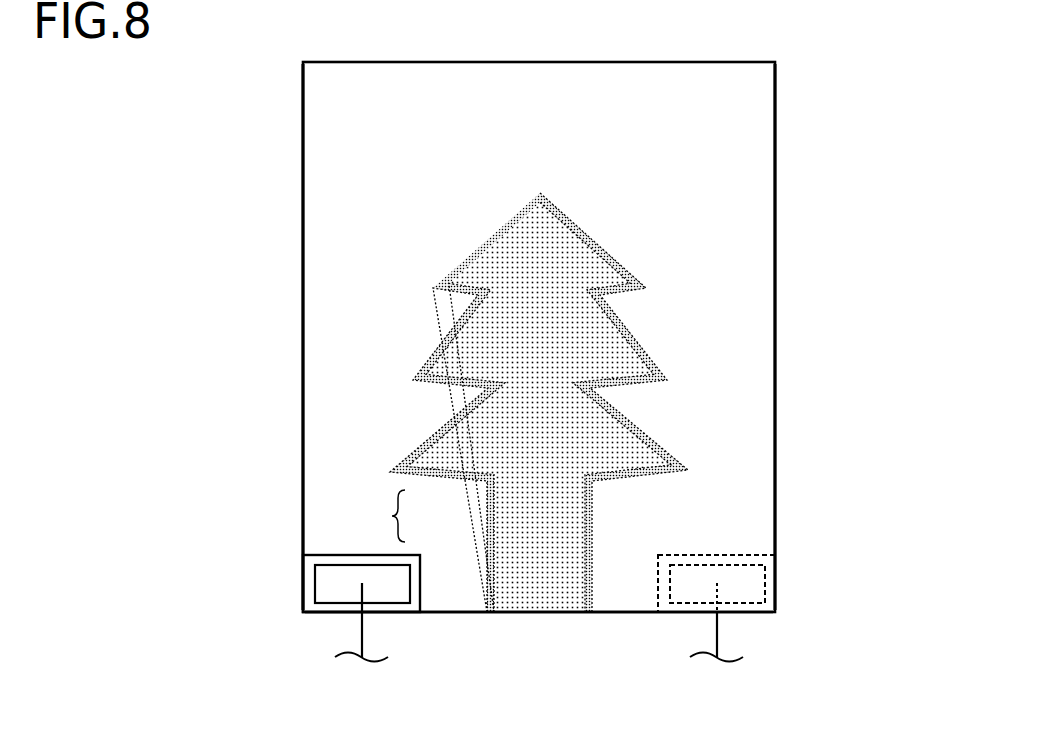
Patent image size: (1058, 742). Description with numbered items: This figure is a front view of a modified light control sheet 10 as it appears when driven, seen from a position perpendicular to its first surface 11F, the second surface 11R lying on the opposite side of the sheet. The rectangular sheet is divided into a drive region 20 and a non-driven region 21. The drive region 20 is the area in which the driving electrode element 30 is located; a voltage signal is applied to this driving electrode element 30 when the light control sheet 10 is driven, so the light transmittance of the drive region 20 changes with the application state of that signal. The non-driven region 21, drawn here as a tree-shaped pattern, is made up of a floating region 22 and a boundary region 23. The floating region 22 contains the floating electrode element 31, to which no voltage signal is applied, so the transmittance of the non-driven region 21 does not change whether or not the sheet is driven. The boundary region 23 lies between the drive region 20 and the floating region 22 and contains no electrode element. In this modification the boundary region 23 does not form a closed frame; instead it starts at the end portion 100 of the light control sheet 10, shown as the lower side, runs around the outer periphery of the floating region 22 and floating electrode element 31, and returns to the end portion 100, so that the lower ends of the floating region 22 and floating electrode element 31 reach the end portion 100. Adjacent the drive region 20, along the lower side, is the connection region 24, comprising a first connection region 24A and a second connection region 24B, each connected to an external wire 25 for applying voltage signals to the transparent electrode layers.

The light control sheet 10 is at (775, 102).
The first surface 11F is at (740, 160).
The second surface 11R is at (776, 230).
The drive region 20 is at (327, 171).
The non-driven region 21 is at (384, 516).
The floating region 22 is at (468, 487).
The boundary region 23 is at (488, 520).
The connection region 24 is at (538, 597).
The first connection region 24A is at (775, 612).
The second connection region 24B is at (303, 612).
The external wire 25 is at (364, 632).
The driving electrode element 30 is at (323, 321).
The floating electrode element 31 is at (520, 402).
The end portion 100 is at (538, 613).